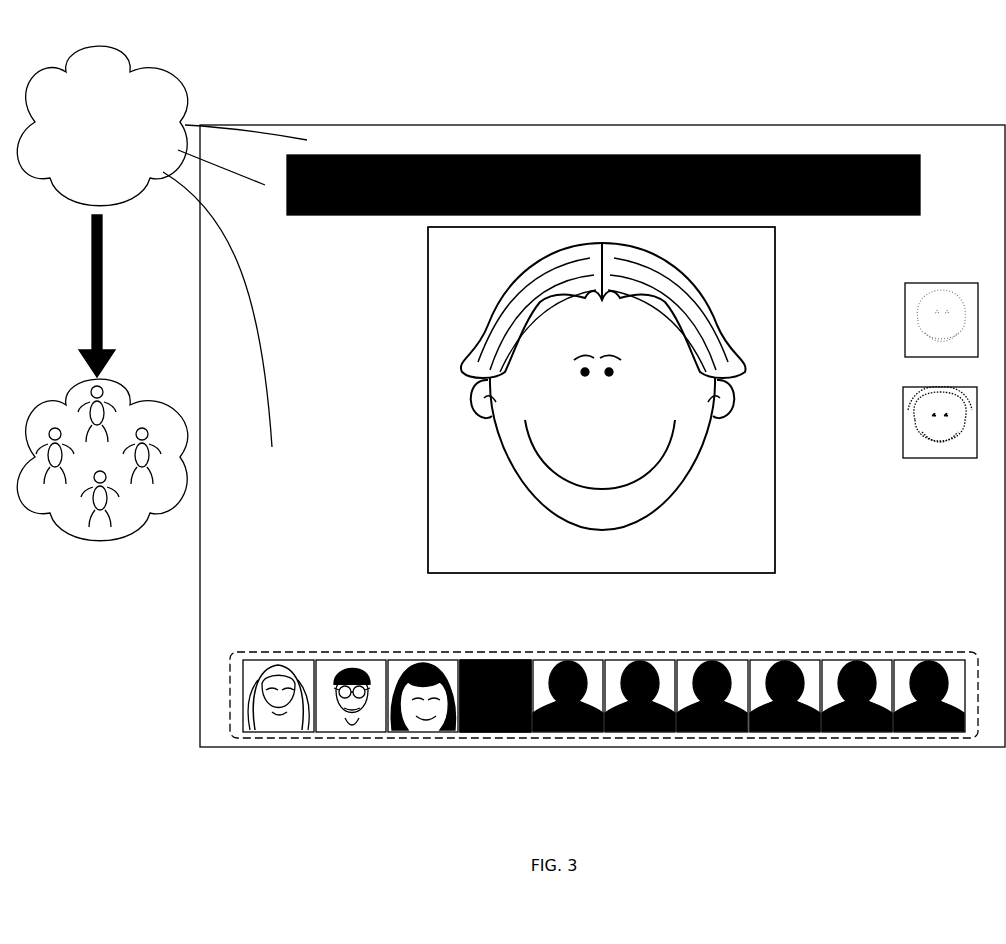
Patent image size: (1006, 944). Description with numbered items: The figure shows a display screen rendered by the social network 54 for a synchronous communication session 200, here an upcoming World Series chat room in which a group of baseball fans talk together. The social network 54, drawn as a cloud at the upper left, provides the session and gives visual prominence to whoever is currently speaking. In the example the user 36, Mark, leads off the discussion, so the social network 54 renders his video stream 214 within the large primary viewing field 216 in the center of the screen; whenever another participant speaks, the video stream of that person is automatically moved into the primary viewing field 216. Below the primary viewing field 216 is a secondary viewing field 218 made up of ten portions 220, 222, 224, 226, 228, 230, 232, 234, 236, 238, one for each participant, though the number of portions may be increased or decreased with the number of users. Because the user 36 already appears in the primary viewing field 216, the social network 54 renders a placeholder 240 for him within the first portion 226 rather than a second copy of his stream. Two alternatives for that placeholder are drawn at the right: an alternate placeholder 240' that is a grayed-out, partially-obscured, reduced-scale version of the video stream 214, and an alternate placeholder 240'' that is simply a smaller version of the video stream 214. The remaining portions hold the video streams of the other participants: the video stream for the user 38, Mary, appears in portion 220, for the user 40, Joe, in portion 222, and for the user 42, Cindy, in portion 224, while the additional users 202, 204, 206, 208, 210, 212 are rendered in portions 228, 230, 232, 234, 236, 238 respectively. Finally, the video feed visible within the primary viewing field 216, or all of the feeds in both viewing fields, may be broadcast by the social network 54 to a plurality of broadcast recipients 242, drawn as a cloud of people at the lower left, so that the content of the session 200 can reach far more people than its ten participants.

The social network 54 is at (102, 126).
The plurality of broadcast recipients 242 is at (92, 545).
The synchronous communication session 200 is at (603, 185).
The primary viewing field 216 is at (428, 521).
The video stream 214 is at (748, 523).
The user 36 is at (603, 402).
The alternate placeholder 240' is at (936, 300).
The alternate placeholder 240'' is at (935, 444).
The secondary viewing field 218 is at (230, 688).
The portion 220 is at (277, 660).
The portion 222 is at (347, 660).
The portion 224 is at (418, 660).
The portion 226 is at (485, 660).
The portion 228 is at (560, 660).
The portion 230 is at (627, 660).
The portion 232 is at (700, 660).
The portion 234 is at (777, 660).
The portion 236 is at (843, 660).
The portion 238 is at (913, 660).
The user 38 is at (287, 733).
The user 40 is at (352, 733).
The user 42 is at (425, 733).
The placeholder 240 is at (500, 719).
The user 202 is at (565, 733).
The user 204 is at (632, 733).
The user 206 is at (705, 733).
The user 208 is at (782, 733).
The user 210 is at (848, 733).
The user 212 is at (920, 733).